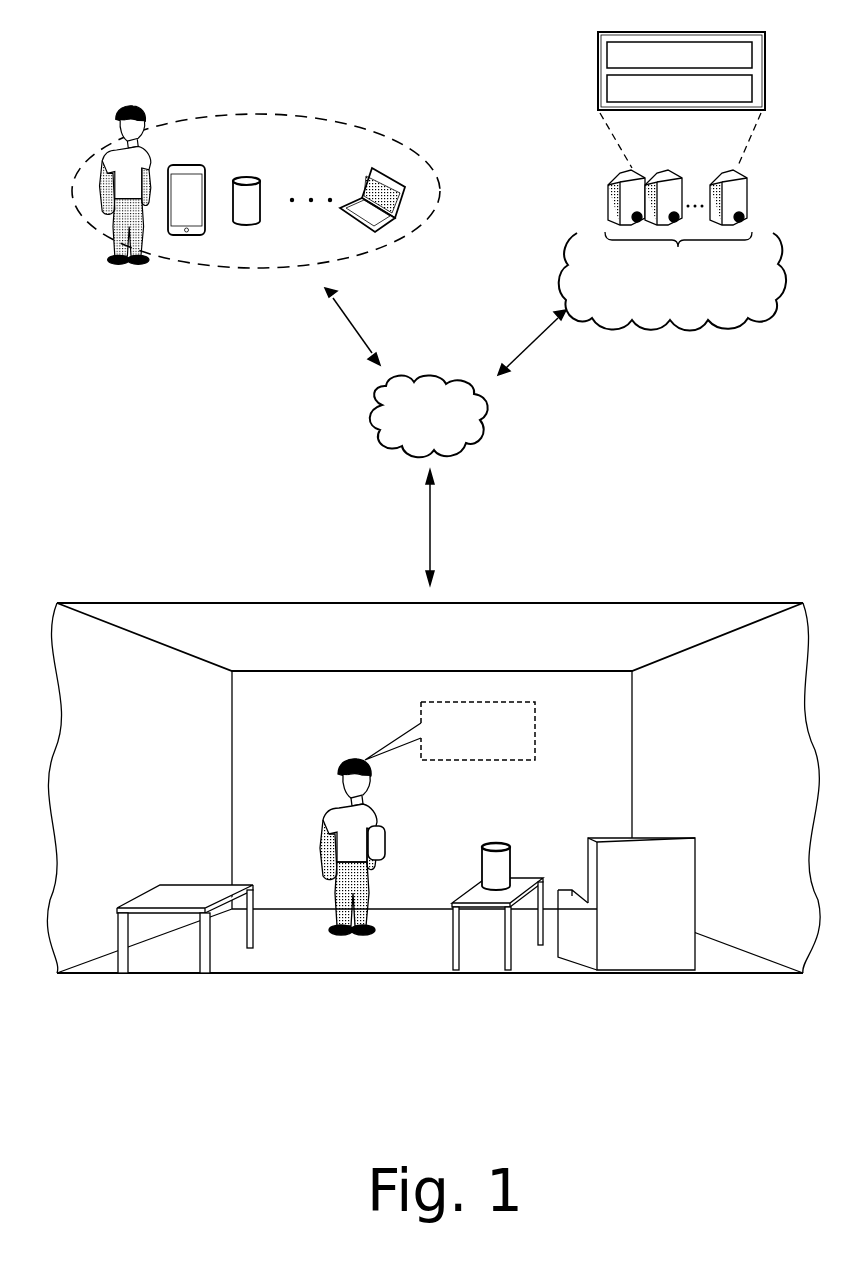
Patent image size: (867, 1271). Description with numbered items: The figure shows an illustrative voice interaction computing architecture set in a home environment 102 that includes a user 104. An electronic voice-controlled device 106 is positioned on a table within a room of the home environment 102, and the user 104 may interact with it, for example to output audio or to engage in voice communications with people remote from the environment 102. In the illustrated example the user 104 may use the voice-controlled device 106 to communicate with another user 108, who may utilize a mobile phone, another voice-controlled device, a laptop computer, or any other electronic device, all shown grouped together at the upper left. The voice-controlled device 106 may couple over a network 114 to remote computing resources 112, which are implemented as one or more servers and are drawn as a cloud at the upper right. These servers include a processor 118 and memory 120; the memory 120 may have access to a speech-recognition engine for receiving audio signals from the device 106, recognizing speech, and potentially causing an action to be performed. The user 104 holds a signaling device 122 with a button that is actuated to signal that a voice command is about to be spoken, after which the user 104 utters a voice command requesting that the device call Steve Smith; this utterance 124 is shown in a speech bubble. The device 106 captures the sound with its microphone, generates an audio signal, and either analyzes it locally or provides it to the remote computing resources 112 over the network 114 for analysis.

The home environment 102 is at (683, 580).
The user 104 is at (342, 756).
The voice-controlled device 106 is at (500, 845).
The another user 108 is at (143, 112).
The remote computing resources 112 is at (746, 299).
The network 114 is at (446, 437).
The processor 118 is at (740, 64).
The memory 120 is at (727, 97).
The signaling device 122 is at (386, 830).
The speech utterance 124 is at (535, 737).